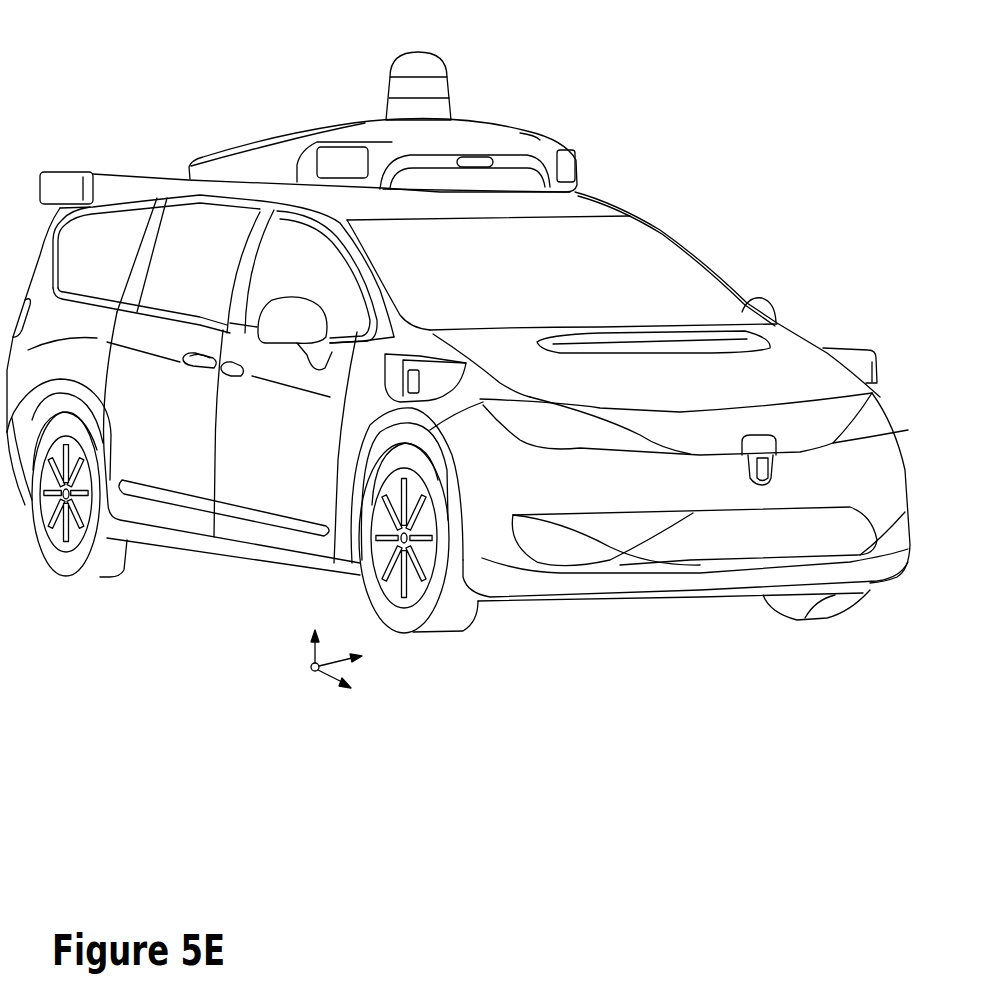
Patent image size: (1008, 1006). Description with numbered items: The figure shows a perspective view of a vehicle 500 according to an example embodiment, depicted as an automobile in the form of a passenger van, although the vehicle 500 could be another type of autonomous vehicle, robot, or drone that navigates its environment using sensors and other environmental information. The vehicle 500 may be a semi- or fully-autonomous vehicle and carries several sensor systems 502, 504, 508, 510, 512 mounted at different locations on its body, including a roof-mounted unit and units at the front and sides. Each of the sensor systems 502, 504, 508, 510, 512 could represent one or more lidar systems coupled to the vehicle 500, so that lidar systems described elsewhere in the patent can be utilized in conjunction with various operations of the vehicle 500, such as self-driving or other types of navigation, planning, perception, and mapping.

The vehicle 500 is at (730, 90).
The sensor system 502 is at (440, 62).
The sensor system 504 is at (755, 482).
The sensor system 508 is at (403, 398).
The sensor system 510 is at (878, 383).
The sensor system 512 is at (477, 167).